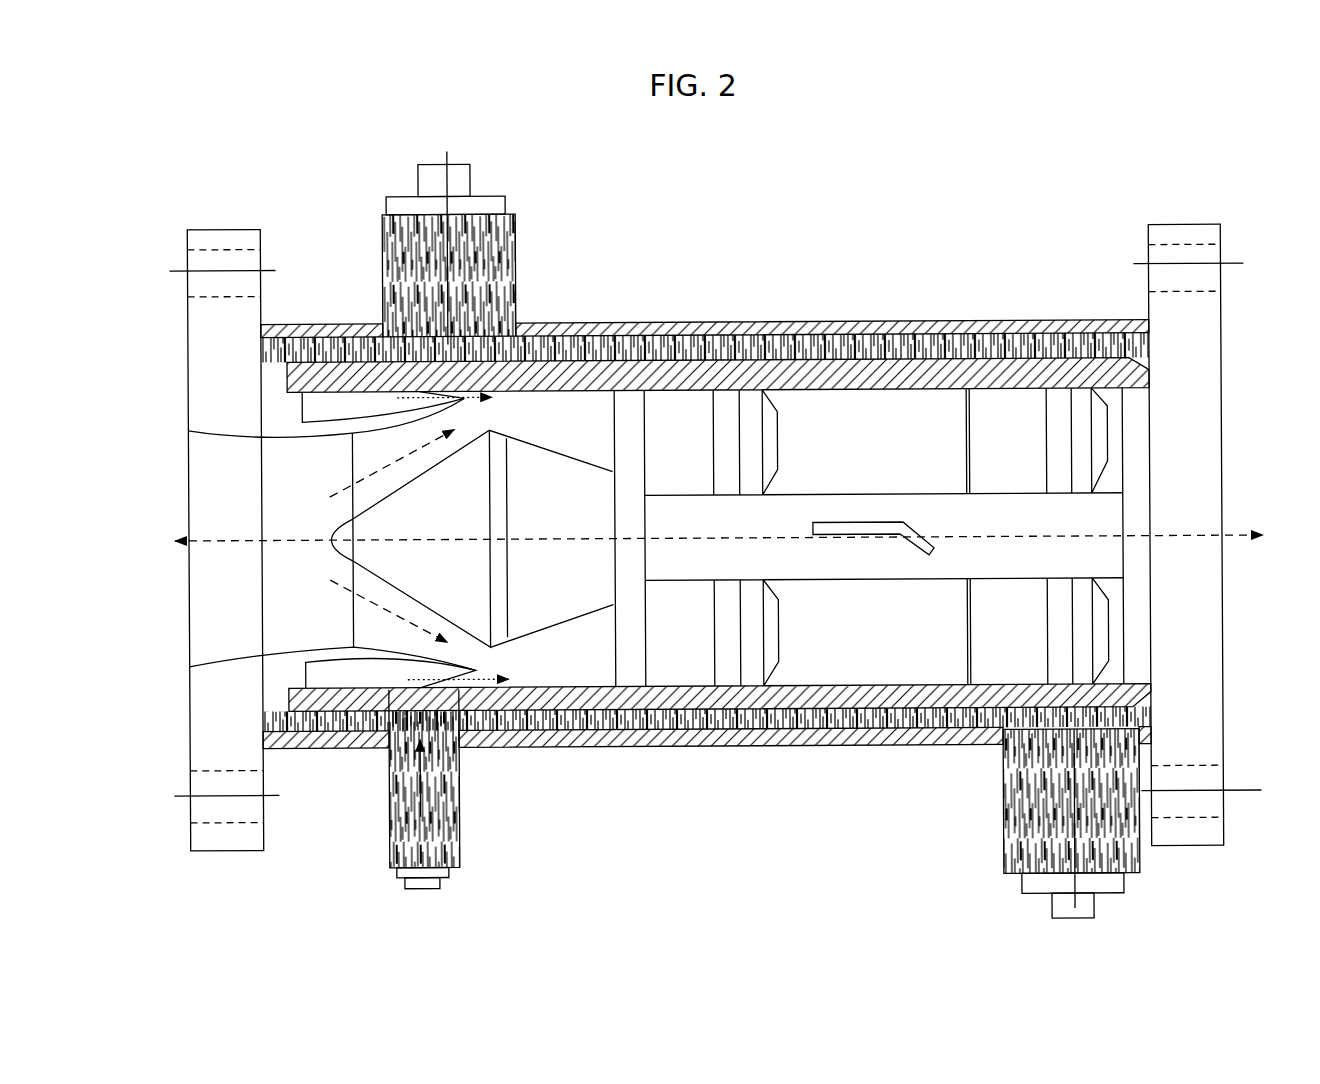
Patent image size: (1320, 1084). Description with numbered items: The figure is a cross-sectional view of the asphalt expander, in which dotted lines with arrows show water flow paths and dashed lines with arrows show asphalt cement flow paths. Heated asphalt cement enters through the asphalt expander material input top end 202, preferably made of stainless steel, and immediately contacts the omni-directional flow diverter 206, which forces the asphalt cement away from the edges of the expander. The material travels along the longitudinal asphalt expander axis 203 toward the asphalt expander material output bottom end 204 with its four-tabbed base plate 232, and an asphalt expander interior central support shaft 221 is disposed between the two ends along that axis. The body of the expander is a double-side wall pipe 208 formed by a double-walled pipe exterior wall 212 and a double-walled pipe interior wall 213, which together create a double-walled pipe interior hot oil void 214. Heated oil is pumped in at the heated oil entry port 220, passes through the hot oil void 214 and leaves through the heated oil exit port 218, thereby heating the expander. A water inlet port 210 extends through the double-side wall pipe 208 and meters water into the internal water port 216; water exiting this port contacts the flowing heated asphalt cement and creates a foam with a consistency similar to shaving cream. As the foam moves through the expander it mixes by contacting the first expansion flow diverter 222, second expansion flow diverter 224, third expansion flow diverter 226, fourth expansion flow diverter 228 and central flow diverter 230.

The asphalt expander material input top end 202 is at (261, 236).
The longitudinal asphalt expander axis 203 is at (1236, 533).
The asphalt expander material output bottom end 204 is at (1240, 604).
The omni-directional flow diverter 206 is at (373, 525).
The double-side wall pipe 208 is at (668, 765).
The water inlet port 210 is at (423, 888).
The double-walled pipe exterior wall 212 is at (632, 322).
The double-walled pipe interior wall 213 is at (735, 360).
The double-walled pipe interior hot oil void 214 is at (880, 345).
The internal water port 216 is at (405, 539).
The heated oil exit port 218 is at (995, 835).
The heated oil entry port 220 is at (366, 217).
The asphalt expander interior central support shaft 221 is at (884, 537).
The first expansion flow diverter 222 is at (700, 442).
The second expansion flow diverter 224 is at (701, 633).
The third expansion flow diverter 226 is at (1020, 631).
The fourth expansion flow diverter 228 is at (1019, 441).
The central flow diverter 230 is at (840, 521).
The four-tabbed base plate 232 is at (1140, 528).